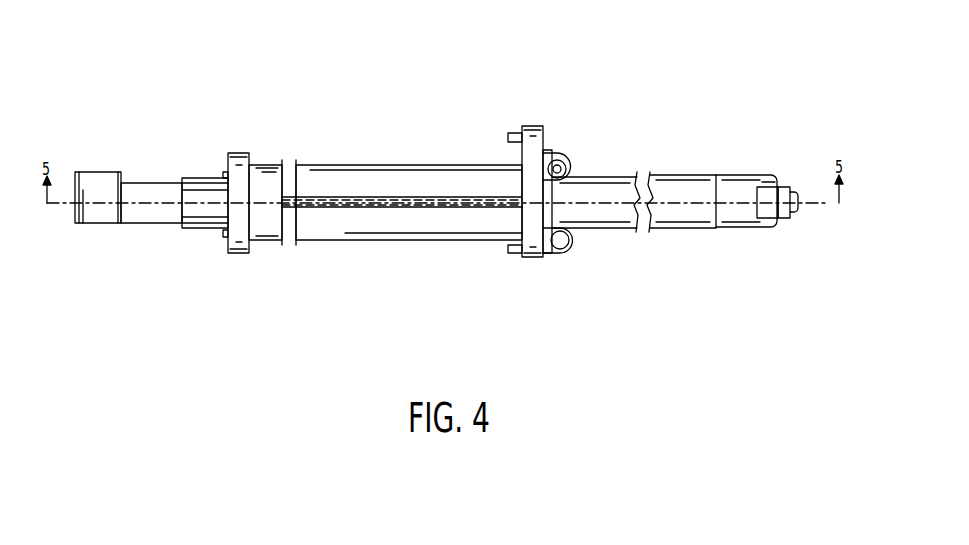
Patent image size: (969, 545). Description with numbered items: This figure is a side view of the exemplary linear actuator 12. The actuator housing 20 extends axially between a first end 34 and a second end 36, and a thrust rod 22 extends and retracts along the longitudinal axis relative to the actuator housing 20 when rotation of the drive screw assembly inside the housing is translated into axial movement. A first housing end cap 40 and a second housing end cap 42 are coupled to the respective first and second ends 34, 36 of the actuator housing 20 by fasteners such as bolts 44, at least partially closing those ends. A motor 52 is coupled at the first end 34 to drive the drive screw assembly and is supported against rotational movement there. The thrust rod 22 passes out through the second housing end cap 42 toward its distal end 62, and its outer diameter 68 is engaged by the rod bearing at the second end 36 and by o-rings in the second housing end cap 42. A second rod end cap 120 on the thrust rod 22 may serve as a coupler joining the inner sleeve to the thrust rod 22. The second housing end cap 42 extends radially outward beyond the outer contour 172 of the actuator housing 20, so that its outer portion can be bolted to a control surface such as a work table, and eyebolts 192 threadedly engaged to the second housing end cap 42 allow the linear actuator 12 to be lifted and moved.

The linear actuator 12 is at (712, 74).
The actuator housing 20 is at (390, 176).
The thrust rod 22 is at (613, 185).
The first end 34 is at (254, 136).
The second end 36 is at (528, 278).
The first housing end cap 40 is at (233, 253).
The second housing end cap 42 is at (533, 133).
The bolts 44 is at (222, 172).
The motor 52 is at (95, 180).
The distal end 62 is at (784, 250).
The outer diameter 68 is at (690, 220).
The second rod end cap 120 is at (763, 177).
The outer contour 172 is at (425, 226).
The eyebolts 192 is at (565, 245).